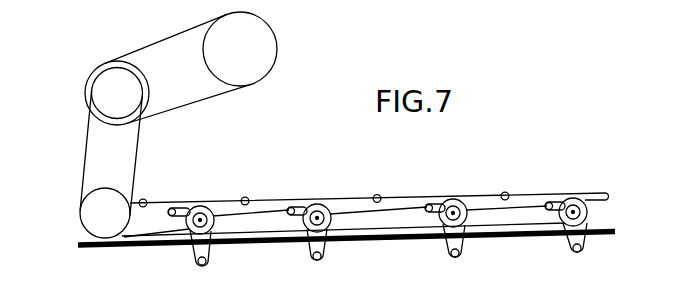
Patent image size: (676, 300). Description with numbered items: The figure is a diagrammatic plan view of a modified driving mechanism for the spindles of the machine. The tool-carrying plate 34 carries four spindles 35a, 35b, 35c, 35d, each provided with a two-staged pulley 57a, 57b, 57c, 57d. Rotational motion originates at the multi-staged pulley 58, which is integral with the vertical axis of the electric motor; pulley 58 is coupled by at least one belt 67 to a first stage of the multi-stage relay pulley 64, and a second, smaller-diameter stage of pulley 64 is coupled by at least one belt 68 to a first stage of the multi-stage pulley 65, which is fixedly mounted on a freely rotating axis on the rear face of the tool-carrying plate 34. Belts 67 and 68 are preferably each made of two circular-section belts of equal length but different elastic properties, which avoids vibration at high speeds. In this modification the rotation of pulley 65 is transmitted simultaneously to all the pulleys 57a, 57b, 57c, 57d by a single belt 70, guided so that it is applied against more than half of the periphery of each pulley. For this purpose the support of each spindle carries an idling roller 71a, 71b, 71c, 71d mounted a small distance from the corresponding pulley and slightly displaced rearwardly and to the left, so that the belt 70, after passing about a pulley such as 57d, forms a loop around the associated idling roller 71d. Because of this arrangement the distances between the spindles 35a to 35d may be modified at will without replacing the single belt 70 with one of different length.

The tool-carrying plate 34 is at (376, 243).
The spindle 35a is at (196, 265).
The spindle 35b is at (312, 257).
The spindle 35c is at (457, 255).
The spindle 35d is at (572, 250).
The two-staged pulley 57a is at (205, 213).
The two-staged pulley 57b is at (321, 210).
The two-staged pulley 57c is at (457, 207).
The two-staged pulley 57d is at (577, 204).
The multi-staged pulley 58 is at (270, 52).
The multi-stage relay pulley 64 is at (101, 92).
The multi-stage pulley 65 is at (94, 218).
The belt 67 is at (183, 32).
The belt 68 is at (86, 160).
The single belt 70 is at (367, 199).
The idling roller 71a is at (176, 207).
The idling roller 71b is at (293, 206).
The idling roller 71c is at (431, 203).
The idling roller 71d is at (551, 201).